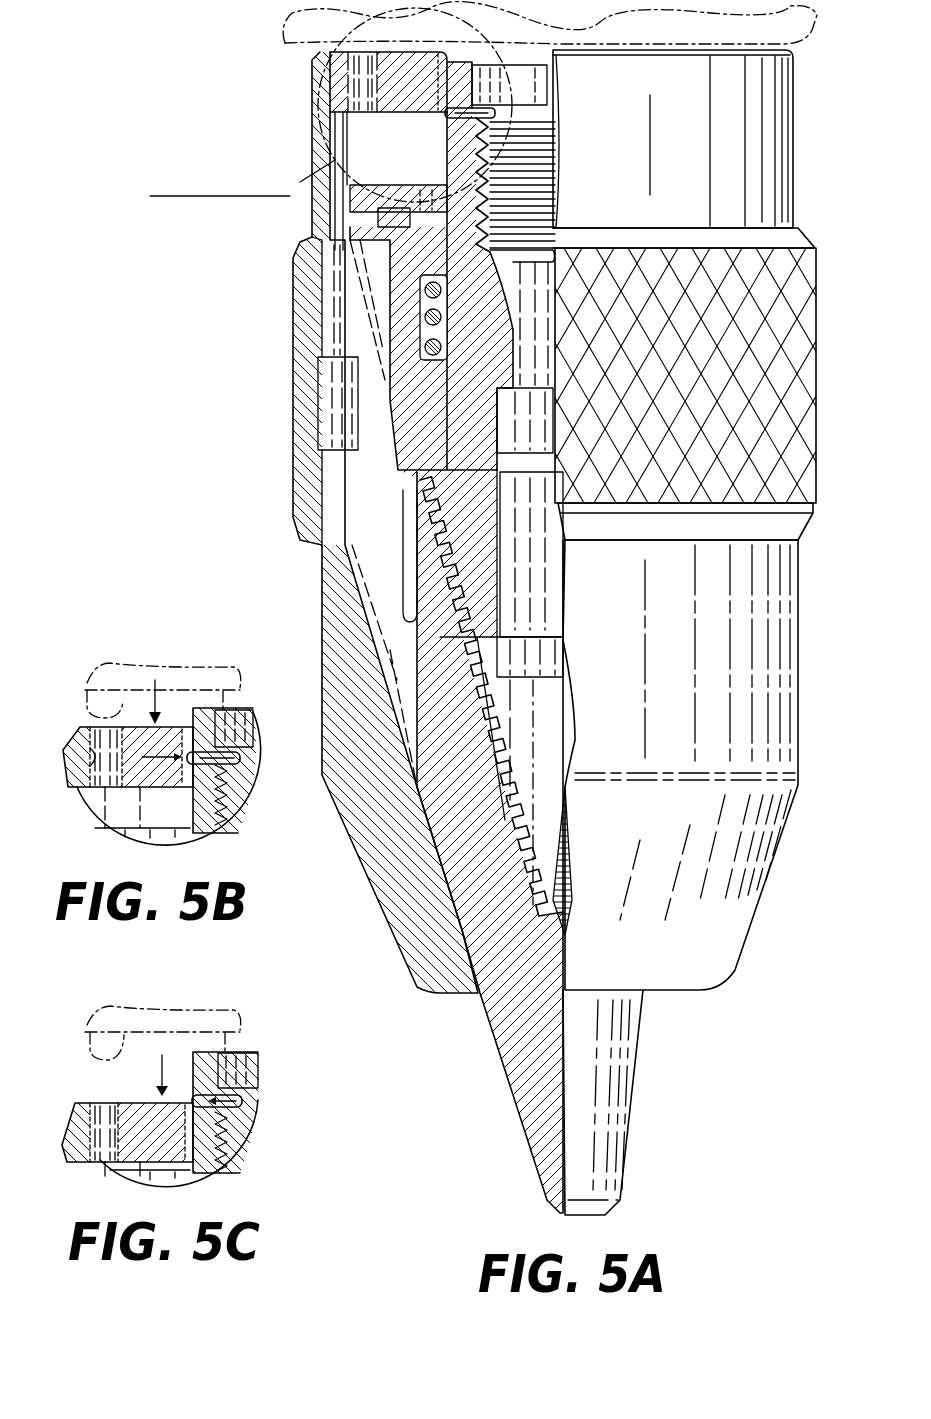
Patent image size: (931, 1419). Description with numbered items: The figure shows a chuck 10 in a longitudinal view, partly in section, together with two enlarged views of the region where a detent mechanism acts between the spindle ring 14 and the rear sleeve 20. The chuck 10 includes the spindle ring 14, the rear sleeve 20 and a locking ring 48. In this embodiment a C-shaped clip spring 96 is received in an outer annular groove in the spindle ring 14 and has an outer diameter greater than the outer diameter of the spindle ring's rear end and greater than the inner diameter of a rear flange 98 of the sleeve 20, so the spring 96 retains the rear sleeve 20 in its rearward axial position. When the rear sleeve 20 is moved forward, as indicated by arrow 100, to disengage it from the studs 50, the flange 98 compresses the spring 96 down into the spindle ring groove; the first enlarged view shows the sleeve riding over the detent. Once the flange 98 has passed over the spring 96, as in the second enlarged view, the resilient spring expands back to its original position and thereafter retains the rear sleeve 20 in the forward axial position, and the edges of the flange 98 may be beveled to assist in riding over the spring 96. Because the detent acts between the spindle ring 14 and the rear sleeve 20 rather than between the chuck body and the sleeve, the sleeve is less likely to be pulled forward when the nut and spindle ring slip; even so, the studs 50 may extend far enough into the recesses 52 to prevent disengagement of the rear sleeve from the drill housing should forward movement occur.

In FIG. 5A, the chuck 10 is at (182, 367).
In FIG. 5A, the spindle ring 14 is at (425, 238).
In FIG. 5A, the rear sleeve 20 is at (797, 122).
In FIG. 5A, the locking ring 48 is at (815, 290).
In FIG. 5A, the C-shaped clip spring 96 is at (447, 110).
In FIG. 5B, the C-shaped clip spring 96 is at (233, 780).
In FIG. 5C, the C-shaped clip spring 96 is at (193, 1093).
In FIG. 5B, the rear flange 98 is at (138, 726).
In FIG. 5C, the rear flange 98 is at (130, 1103).
In FIG. 5B, the arrow 100 is at (158, 718).
In FIG. 5B, the studs 50 is at (87, 692).
In FIG. 5B, the recesses 52 is at (98, 757).